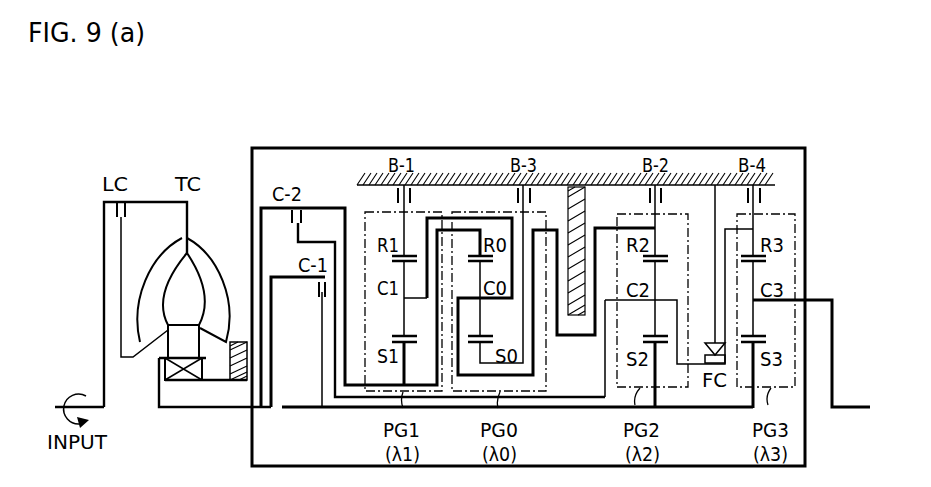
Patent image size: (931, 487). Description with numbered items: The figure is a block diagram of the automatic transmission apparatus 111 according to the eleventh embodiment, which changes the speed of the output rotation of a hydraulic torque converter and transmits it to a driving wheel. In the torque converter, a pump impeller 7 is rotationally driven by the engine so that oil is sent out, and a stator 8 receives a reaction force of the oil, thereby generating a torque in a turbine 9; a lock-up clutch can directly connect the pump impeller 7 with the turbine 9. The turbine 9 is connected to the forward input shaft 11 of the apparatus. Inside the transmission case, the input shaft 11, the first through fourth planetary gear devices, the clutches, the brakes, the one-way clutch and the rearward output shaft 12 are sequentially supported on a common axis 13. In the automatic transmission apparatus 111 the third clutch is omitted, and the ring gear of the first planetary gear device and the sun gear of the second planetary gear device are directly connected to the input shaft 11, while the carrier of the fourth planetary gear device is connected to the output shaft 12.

The pump impeller 7 is at (207, 260).
The stator 8 is at (173, 338).
The turbine 9 is at (162, 262).
The input shaft 11 is at (212, 408).
The output shaft 12 is at (852, 408).
The common axis 13 is at (294, 407).
The automatic transmission apparatus 111 is at (562, 147).